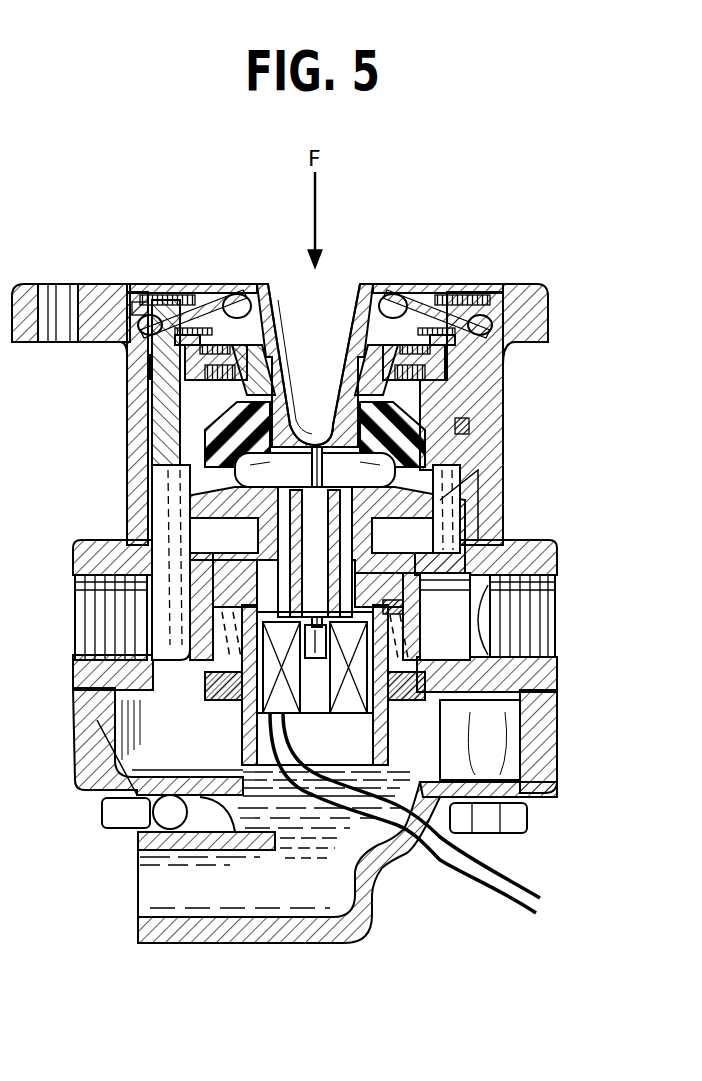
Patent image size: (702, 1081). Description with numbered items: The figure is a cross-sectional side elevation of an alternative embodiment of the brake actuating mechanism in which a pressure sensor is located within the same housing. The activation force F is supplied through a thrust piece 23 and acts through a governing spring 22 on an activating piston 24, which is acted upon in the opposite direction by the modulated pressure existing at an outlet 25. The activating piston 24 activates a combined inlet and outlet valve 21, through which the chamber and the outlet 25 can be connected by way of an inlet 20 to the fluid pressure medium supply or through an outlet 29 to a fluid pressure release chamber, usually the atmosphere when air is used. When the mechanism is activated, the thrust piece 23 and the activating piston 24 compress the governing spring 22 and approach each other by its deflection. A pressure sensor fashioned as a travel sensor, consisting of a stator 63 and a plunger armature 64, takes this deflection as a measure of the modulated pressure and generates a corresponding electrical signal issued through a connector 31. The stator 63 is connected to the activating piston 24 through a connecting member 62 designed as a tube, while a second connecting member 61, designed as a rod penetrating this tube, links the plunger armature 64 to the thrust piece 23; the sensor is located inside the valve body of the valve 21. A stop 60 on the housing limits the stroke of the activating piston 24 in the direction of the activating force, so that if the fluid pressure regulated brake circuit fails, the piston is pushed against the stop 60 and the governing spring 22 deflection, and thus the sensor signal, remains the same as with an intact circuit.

The inlet 20 is at (540, 620).
The combined inlet and outlet valve 21 is at (245, 540).
The governing spring 22 is at (218, 427).
The thrust piece 23 is at (263, 285).
The activating piston 24 is at (467, 395).
The outlet 25 is at (86, 600).
The outlet 29 is at (153, 888).
The connector 31 is at (549, 886).
The stop 60 is at (476, 530).
The second connecting member 61 is at (317, 537).
The connecting member 62 is at (385, 605).
The stator 63 is at (348, 703).
The plunger armature 64 is at (318, 660).